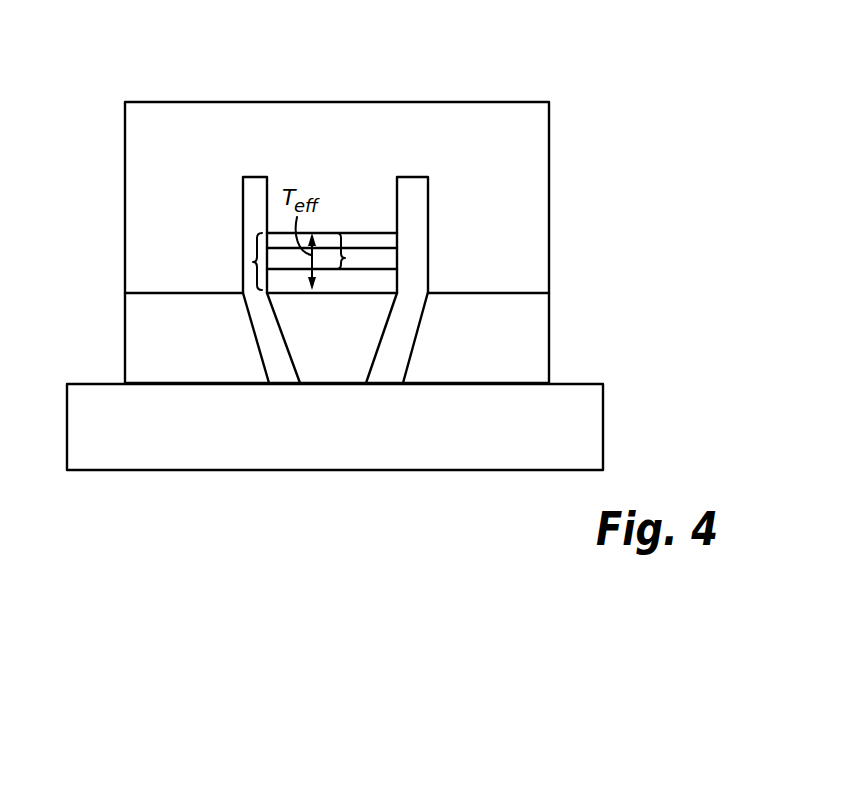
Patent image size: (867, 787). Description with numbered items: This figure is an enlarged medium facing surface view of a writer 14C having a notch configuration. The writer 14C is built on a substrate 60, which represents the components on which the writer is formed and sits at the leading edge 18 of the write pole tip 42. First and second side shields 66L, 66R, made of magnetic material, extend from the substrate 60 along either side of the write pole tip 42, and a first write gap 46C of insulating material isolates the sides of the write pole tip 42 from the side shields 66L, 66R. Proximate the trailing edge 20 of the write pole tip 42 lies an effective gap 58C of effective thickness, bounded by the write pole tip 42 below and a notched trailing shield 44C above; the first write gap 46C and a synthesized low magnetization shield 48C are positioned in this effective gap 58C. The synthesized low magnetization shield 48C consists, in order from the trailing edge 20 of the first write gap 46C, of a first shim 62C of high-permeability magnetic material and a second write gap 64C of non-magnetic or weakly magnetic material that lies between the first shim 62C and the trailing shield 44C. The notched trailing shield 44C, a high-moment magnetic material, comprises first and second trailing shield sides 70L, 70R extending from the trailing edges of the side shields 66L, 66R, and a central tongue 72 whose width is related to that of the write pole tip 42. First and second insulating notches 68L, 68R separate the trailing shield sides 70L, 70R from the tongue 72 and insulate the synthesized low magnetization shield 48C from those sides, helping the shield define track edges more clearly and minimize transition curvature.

The trailing edge 20 is at (188, 90).
The writer 14C is at (478, 80).
The first notch 68L is at (250, 185).
The second notch 68R is at (420, 189).
The tongue 72 is at (280, 215).
The notched trailing shield 44C is at (353, 138).
The second write gap 64C is at (372, 242).
The first shim 62C is at (390, 258).
The effective gap 58C is at (253, 262).
The synthesized low magnetization shield 48C is at (364, 253).
The first trailing shield side 70L is at (166, 274).
The second trailing shield side 70R is at (526, 283).
The first write gap 46C is at (412, 283).
The first side shield 66L is at (210, 351).
The second side shield 66R is at (490, 352).
The write pole tip 42 is at (348, 348).
The substrate 60 is at (343, 443).
The leading edge 18 is at (205, 482).